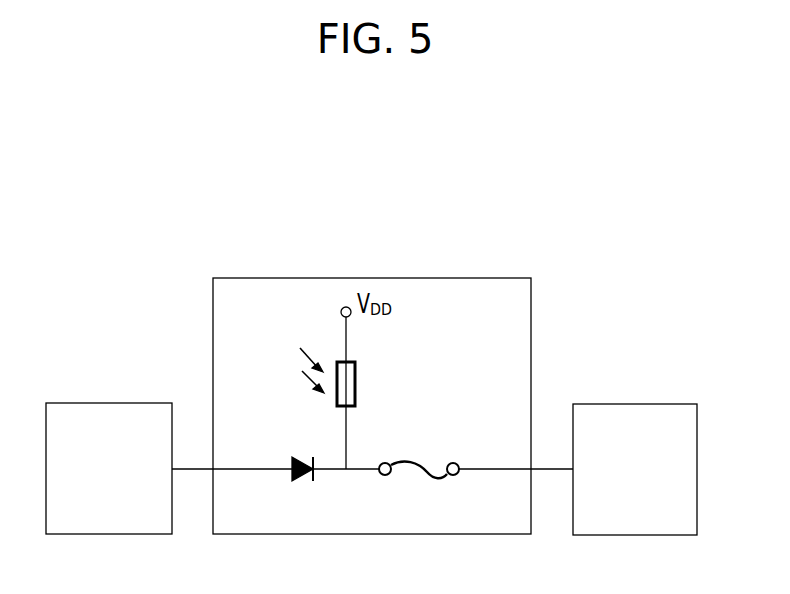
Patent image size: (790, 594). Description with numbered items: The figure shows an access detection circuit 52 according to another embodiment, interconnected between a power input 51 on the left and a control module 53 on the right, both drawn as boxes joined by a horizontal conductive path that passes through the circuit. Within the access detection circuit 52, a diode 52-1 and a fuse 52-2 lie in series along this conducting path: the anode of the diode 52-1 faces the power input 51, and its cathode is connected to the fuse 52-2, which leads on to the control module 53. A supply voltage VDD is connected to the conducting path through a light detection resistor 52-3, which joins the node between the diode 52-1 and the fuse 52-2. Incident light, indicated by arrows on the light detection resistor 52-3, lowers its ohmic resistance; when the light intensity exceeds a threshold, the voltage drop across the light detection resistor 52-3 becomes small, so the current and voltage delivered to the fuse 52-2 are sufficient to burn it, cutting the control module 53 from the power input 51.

The power input 51 is at (95, 479).
The access detection circuit 52 is at (291, 278).
The diode 52-1 is at (300, 457).
The fuse 52-2 is at (398, 458).
The light detection resistor 52-3 is at (355, 375).
The control module 53 is at (621, 479).